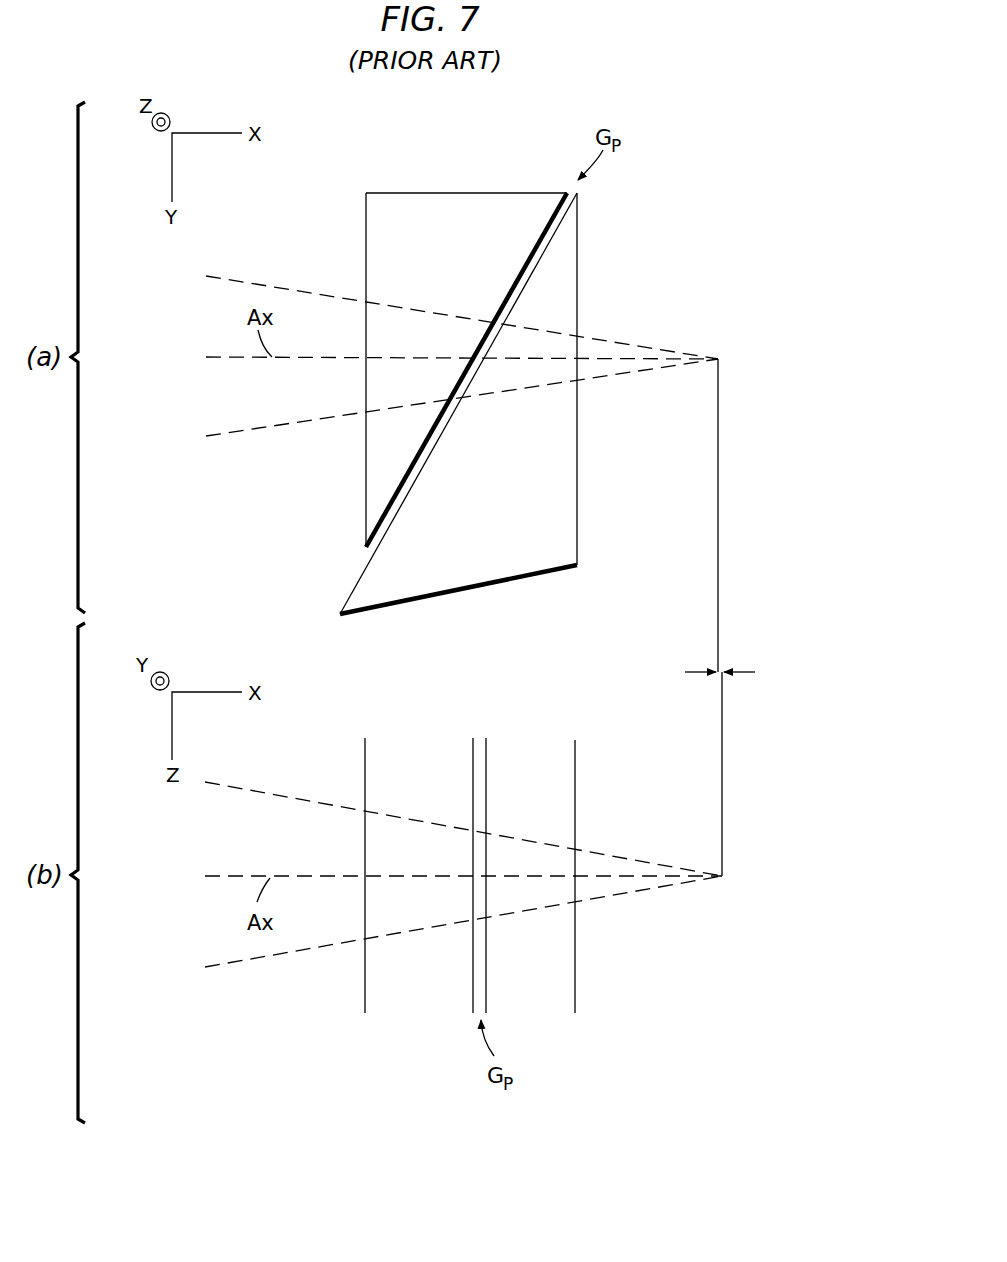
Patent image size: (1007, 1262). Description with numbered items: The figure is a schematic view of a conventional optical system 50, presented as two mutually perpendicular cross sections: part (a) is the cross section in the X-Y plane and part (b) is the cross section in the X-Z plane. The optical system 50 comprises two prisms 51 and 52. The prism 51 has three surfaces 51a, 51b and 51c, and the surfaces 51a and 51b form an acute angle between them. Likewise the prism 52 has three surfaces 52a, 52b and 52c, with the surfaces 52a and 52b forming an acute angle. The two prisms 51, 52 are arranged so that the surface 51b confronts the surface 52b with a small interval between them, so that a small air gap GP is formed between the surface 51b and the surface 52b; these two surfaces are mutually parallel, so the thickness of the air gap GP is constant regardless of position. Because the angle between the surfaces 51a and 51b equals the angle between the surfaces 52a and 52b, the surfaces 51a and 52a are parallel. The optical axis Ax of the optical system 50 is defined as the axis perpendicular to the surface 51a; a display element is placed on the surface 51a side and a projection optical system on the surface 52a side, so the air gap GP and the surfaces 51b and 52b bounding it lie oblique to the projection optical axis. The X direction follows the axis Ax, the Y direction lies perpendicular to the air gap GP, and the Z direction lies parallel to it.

The optical system 50 is at (656, 688).
The prism 51 is at (495, 628).
The surface 51a is at (578, 452).
The surface 51b is at (540, 262).
The surface 51c is at (455, 597).
The prism 52 is at (468, 600).
The surface 52a is at (366, 238).
The surface 52b is at (556, 230).
The surface 52c is at (411, 192).